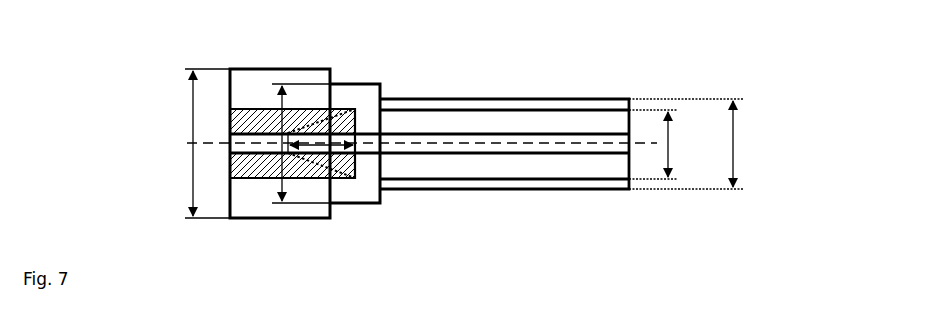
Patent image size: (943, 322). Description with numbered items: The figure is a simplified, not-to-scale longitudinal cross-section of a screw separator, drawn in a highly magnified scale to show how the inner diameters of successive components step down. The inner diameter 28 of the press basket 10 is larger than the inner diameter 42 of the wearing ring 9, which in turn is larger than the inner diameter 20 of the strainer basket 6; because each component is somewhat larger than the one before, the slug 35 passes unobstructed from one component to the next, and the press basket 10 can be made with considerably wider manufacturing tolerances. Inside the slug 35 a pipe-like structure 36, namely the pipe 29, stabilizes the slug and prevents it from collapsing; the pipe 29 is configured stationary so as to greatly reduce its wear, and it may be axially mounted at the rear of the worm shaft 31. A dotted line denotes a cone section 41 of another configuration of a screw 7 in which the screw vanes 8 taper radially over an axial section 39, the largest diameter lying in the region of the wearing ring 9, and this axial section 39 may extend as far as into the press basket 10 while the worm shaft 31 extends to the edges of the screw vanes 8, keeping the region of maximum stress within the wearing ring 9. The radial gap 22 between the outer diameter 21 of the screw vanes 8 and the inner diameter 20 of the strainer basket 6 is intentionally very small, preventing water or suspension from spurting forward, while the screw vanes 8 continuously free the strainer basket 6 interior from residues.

The strainer basket 6 is at (615, 98).
The screw 7 is at (540, 118).
The screw vanes 8 is at (487, 120).
The wearing ring 9 is at (378, 83).
The press basket 10 is at (310, 68).
The inner diameter of the strainer basket 20 is at (735, 140).
The outer diameter of the screw vanes 21 is at (673, 143).
The radial gap 22 is at (455, 183).
The inner diameter of the press basket 28 is at (188, 179).
The pipe 29 is at (262, 140).
The worm shaft 31 is at (428, 142).
The slug 35 is at (230, 122).
The pipe-like structure 36 is at (237, 138).
The axial section 39 is at (305, 148).
The cone section 41 is at (313, 170).
The inner diameter of the wearing ring 42 is at (277, 189).